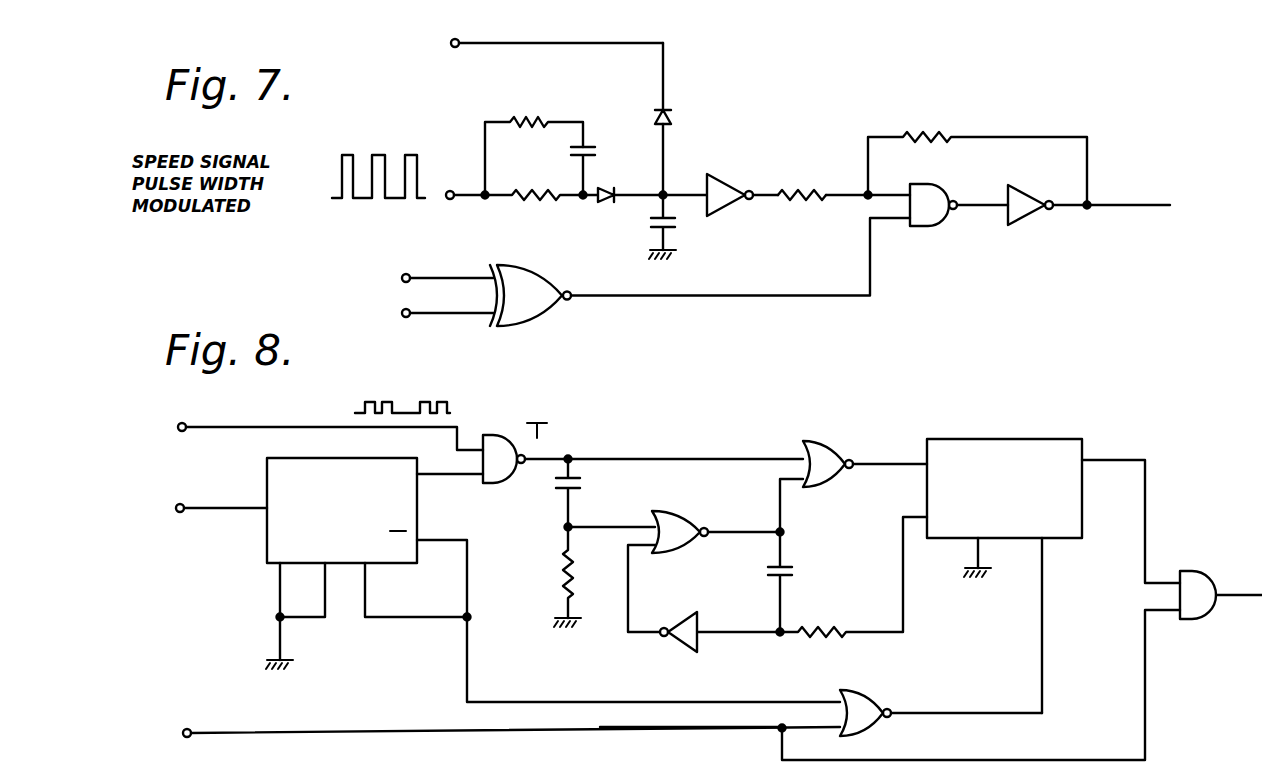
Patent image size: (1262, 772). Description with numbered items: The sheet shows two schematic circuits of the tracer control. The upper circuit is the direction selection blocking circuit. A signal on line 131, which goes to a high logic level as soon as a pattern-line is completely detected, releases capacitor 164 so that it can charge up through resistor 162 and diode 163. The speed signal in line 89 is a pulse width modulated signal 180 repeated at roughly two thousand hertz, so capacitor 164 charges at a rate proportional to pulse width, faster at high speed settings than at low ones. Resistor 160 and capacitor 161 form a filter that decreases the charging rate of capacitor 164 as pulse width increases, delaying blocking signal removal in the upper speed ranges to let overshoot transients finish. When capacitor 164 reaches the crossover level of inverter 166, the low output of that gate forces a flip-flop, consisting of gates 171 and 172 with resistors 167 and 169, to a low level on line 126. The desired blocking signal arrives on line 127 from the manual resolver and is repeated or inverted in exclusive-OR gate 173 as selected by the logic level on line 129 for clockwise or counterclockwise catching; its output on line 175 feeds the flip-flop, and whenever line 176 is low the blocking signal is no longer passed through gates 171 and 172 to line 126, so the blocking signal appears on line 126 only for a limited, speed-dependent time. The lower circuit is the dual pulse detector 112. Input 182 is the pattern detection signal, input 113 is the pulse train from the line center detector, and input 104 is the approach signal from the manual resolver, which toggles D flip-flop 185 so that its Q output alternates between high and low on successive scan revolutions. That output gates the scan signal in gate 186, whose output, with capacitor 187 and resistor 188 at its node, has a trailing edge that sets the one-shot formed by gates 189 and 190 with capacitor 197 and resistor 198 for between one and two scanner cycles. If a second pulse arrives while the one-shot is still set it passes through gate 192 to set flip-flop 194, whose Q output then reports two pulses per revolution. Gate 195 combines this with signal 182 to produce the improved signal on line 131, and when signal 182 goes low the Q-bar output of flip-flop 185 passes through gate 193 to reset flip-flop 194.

In FIG. 7, the line 131 is at (507, 43).
In FIG. 8, the line 131 is at (1254, 602).
In FIG. 7, the line 89 is at (449, 190).
In FIG. 7, the pulse width modulated signal 180 is at (372, 163).
In FIG. 7, the resistor 160 is at (530, 118).
In FIG. 7, the capacitor 161 is at (590, 137).
In FIG. 7, the resistor 162 is at (525, 205).
In FIG. 7, the diode 163 is at (608, 208).
In FIG. 7, the capacitor 164 is at (678, 222).
In FIG. 7, the inverter 166 is at (722, 185).
In FIG. 7, the resistor 167 is at (806, 190).
In FIG. 7, the line 176 is at (786, 164).
In FIG. 7, the resistor 169 is at (926, 131).
In FIG. 7, the gate 171 is at (917, 226).
In FIG. 7, the gate 172 is at (1026, 221).
In FIG. 7, the line 126 is at (1135, 207).
In FIG. 7, the logic level 129 is at (440, 258).
In FIG. 7, the line 127 is at (445, 316).
In FIG. 7, the exclusive-OR gate 173 is at (540, 308).
In FIG. 7, the line 175 is at (695, 300).
In FIG. 8, the input 113 is at (262, 425).
In FIG. 8, the D flip-flop 185 is at (267, 470).
In FIG. 8, the input 104 is at (224, 512).
In FIG. 8, the gate 186 is at (495, 440).
In FIG. 8, the capacitor 187 is at (580, 480).
In FIG. 8, the resistor 188 is at (562, 582).
In FIG. 8, the gate 189 is at (675, 520).
In FIG. 8, the gate 190 is at (689, 617).
In FIG. 8, the capacitor 197 is at (794, 572).
In FIG. 8, the resistor 198 is at (820, 640).
In FIG. 8, the gate 192 is at (828, 450).
In FIG. 8, the flip-flop 194 is at (1021, 446).
In FIG. 8, the gate 195 is at (1196, 588).
In FIG. 8, the input 182 is at (288, 731).
In FIG. 8, the gate 193 is at (863, 704).
In FIG. 8, the dual pulse detector 112 is at (651, 744).